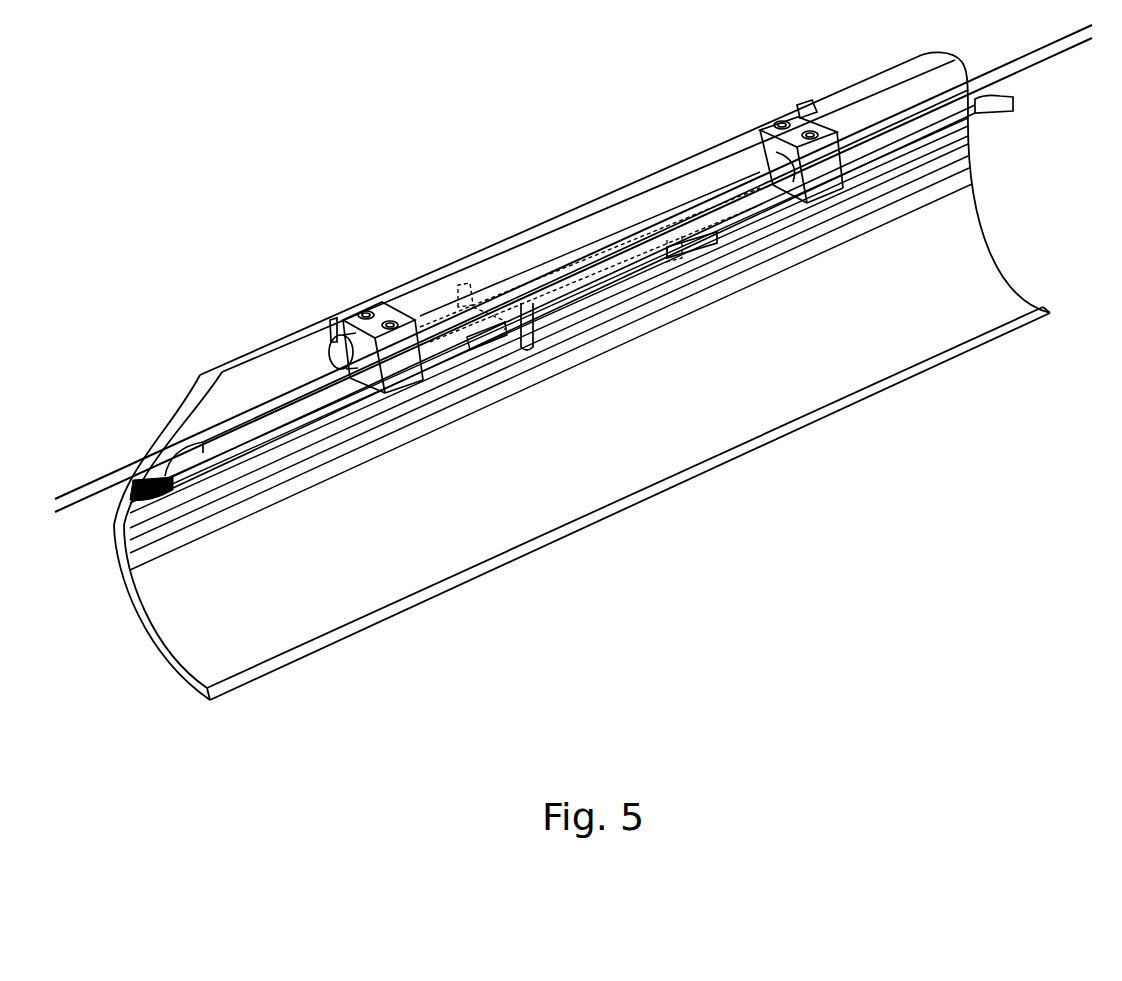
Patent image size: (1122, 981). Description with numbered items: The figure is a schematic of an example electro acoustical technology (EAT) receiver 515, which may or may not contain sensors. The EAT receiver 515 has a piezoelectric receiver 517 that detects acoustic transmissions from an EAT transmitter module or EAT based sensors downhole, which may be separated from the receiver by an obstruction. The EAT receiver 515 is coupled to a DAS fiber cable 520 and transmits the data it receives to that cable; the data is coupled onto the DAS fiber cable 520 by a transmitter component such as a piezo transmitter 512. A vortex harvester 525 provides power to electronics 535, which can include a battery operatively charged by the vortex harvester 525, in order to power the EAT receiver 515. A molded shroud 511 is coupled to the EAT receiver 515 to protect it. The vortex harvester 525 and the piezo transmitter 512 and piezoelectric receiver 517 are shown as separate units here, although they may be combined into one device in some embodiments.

The molded shroud 511 is at (698, 152).
The piezo transmitter 512 is at (827, 190).
The EAT receiver 515 is at (551, 252).
The piezoelectric receiver 517 is at (392, 396).
The DAS fiber cable 520 is at (287, 402).
The vortex harvester 525 is at (534, 343).
The electronics 535 is at (467, 298).